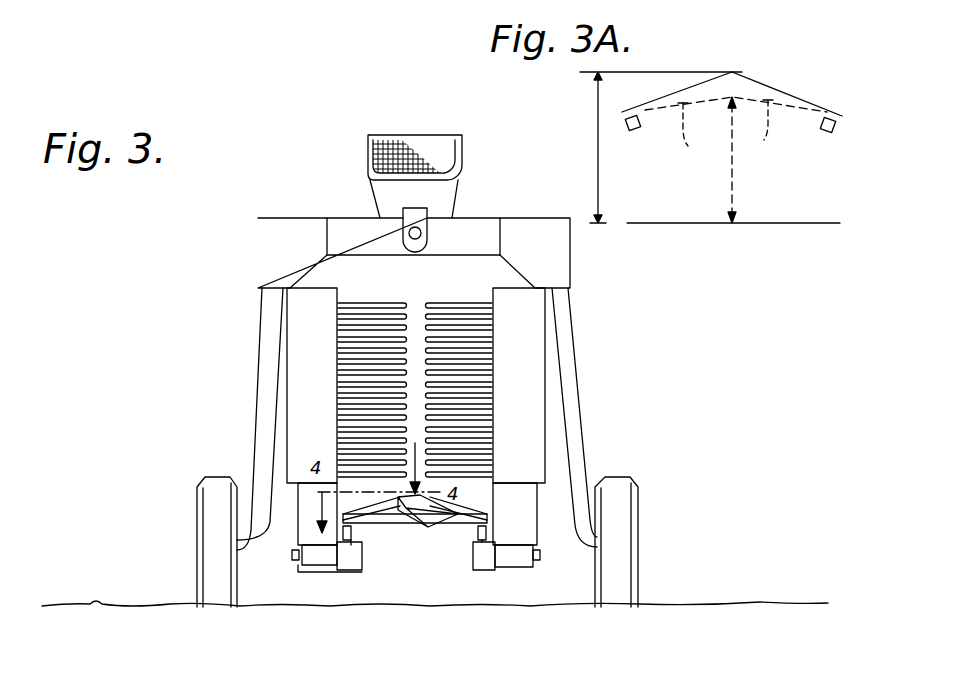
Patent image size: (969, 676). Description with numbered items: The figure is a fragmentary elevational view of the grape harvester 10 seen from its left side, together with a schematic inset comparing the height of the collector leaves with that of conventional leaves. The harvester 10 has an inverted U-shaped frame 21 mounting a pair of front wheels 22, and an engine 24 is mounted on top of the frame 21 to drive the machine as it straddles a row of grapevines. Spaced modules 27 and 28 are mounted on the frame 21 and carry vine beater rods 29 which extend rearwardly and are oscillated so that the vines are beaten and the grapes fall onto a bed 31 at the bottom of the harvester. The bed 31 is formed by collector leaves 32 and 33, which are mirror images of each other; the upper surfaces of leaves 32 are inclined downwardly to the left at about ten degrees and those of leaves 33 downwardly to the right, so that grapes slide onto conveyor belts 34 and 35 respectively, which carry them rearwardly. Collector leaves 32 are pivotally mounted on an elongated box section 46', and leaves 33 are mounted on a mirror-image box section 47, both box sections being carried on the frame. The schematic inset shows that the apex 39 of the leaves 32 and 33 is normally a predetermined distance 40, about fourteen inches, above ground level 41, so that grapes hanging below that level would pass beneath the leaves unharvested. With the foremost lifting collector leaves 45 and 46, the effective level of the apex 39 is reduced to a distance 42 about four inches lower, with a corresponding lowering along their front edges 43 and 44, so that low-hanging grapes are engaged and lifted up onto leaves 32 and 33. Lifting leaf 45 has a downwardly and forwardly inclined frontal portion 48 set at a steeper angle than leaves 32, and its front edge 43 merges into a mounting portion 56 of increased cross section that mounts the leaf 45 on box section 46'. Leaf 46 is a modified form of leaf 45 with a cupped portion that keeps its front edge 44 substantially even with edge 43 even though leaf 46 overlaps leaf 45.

In FIG. 3, the harvester 10 is at (240, 250).
In FIG. 3, the inverted U-shaped frame 21 is at (294, 218).
In FIG. 3, the front wheels 22 is at (206, 478).
In FIG. 3, the engine 24 is at (368, 148).
In FIG. 3, the module 27 is at (545, 337).
In FIG. 3, the module 28 is at (287, 350).
In FIG. 3, the vine beater rods 29 is at (378, 336).
In FIG. 3, the bed 31 is at (470, 506).
In FIG. 3A, the collector leaves 32 is at (680, 92).
In FIG. 3A, the collector leaves 33 is at (770, 88).
In FIG. 3, the conveyor belt 34 is at (315, 568).
In FIG. 3, the conveyor belt 35 is at (520, 567).
In FIG. 3A, the apex 39 is at (738, 72).
In FIG. 3A, the predetermined distance 40 is at (595, 112).
In FIG. 3, the ground level 41 is at (100, 606).
In FIG. 3A, the ground level 41 is at (694, 223).
In FIG. 3A, the reduced distance 42 is at (733, 172).
In FIG. 3, the front edge 43 is at (382, 525).
In FIG. 3A, the front edge 43 is at (696, 134).
In FIG. 3, the front edge 44 is at (448, 525).
In FIG. 3A, the front edge 44 is at (769, 131).
In FIG. 3, the lifting collector leaf 45 is at (392, 527).
In FIG. 3, the lifting collector leaf 46 is at (434, 581).
In FIG. 3, the box section 46' is at (349, 590).
In FIG. 3A, the box section 46' is at (647, 146).
In FIG. 3, the box section 47 is at (460, 527).
In FIG. 3A, the box section 47 is at (834, 131).
In FIG. 3, the frontal portion 48 is at (404, 527).
In FIG. 3, the mounting portion 56 is at (348, 502).